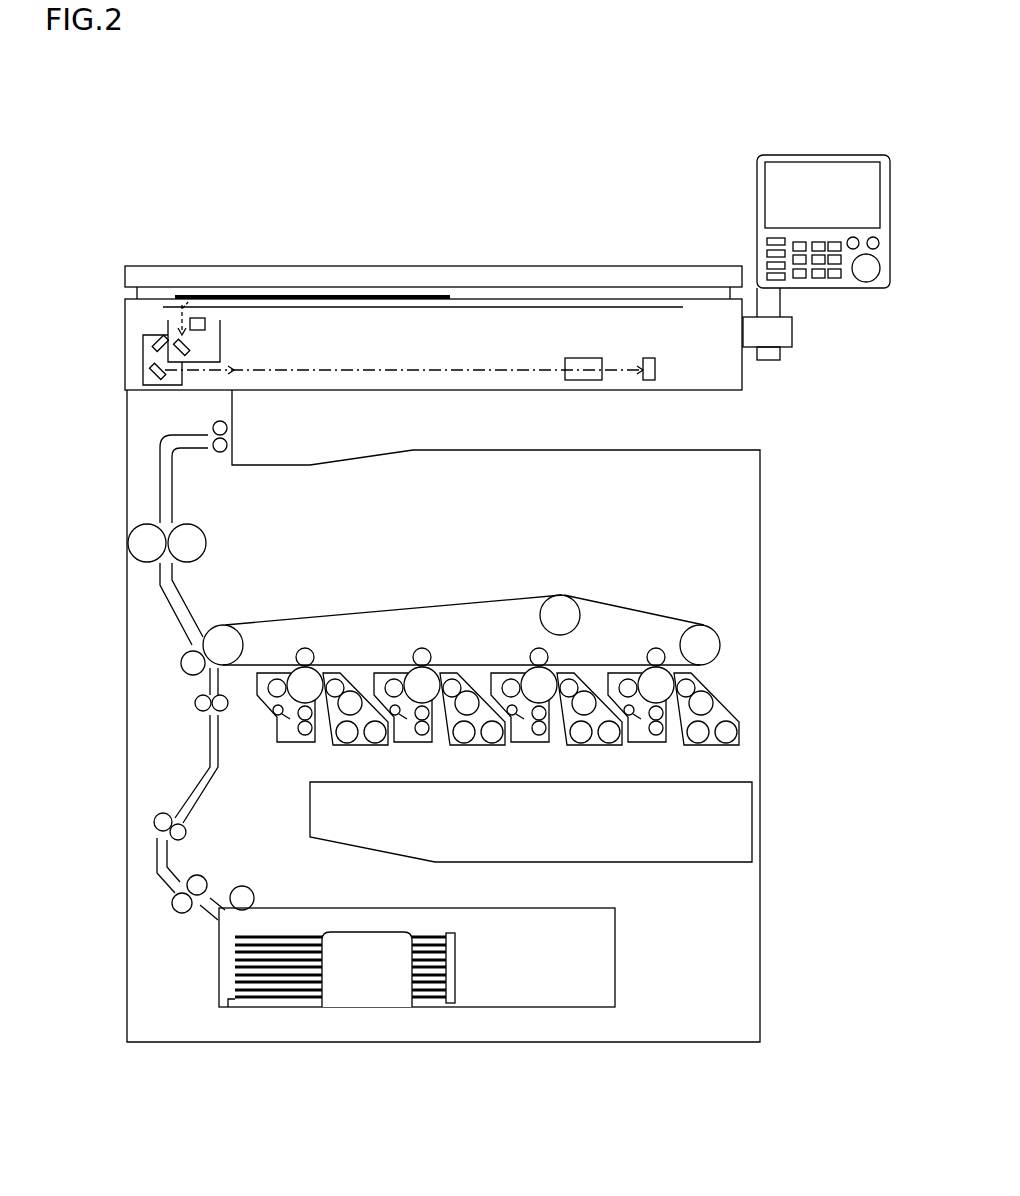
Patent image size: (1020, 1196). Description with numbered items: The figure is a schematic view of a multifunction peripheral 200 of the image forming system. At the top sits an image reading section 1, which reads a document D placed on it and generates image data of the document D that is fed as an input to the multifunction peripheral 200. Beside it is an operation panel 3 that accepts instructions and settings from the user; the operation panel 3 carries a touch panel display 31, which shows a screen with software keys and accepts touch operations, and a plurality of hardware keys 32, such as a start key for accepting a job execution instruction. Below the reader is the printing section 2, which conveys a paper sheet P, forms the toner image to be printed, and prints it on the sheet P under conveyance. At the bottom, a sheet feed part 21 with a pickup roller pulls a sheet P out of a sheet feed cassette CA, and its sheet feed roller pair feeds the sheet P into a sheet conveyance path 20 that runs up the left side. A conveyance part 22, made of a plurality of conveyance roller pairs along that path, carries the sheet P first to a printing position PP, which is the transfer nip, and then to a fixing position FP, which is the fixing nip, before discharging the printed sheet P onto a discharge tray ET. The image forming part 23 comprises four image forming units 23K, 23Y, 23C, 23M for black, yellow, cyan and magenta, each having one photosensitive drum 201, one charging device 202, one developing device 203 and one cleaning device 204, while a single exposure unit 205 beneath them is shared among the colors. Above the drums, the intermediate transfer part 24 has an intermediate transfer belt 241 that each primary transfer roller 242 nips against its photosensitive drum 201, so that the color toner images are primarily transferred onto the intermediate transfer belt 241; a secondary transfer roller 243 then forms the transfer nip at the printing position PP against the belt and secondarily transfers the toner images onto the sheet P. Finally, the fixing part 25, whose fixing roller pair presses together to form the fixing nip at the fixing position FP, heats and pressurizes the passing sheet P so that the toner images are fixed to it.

The multifunction peripheral 200 is at (190, 232).
The image reading section 1 is at (710, 378).
The document D is at (413, 295).
The operation panel 3 is at (742, 190).
The touch panel display 31 is at (813, 176).
The hardware keys 32 is at (865, 282).
The printing section 2 is at (585, 549).
The discharge tray ET is at (346, 458).
The sheet conveyance path 20 is at (177, 490).
The conveyance part 22 is at (212, 427).
The fixing part 25 is at (212, 559).
The fixing position FP is at (173, 565).
The intermediate transfer part 24 is at (250, 612).
The intermediate transfer belt 241 is at (380, 612).
The primary transfer rollers 242 is at (300, 652).
The secondary transfer roller 243 is at (182, 658).
The printing position PP is at (196, 677).
The image forming part 23 is at (268, 753).
The image forming unit 23K is at (326, 745).
The image forming unit 23Y is at (421, 721).
The image forming unit 23C is at (562, 745).
The image forming unit 23M is at (673, 745).
The photosensitive drum 201 is at (418, 678).
The charging device 202 is at (420, 746).
The developing device 203 is at (470, 680).
The cleaning device 204 is at (392, 680).
The exposure unit 205 is at (523, 864).
The sheet feed part 21 is at (250, 880).
The sheet feed cassette CA is at (380, 908).
The sheet P is at (457, 924).